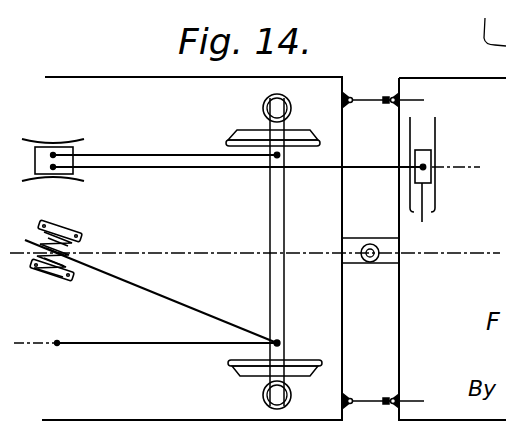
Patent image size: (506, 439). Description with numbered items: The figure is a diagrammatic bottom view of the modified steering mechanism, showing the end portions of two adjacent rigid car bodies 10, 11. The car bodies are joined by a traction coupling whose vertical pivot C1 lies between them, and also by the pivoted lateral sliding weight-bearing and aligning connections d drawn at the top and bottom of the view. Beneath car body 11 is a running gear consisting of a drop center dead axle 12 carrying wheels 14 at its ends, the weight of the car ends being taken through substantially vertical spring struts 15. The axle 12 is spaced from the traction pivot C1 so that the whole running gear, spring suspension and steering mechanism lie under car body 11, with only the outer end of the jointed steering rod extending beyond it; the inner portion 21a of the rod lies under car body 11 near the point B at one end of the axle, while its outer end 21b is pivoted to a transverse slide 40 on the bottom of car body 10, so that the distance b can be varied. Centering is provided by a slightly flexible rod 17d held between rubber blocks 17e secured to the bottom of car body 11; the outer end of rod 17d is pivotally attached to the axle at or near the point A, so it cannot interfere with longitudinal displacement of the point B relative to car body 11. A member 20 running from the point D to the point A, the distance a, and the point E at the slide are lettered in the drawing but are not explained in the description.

The car body 10 is at (484, 88).
The car body 11 is at (126, 91).
The drop center dead axle 12 is at (270, 212).
The wheels 14 is at (242, 128).
The spring struts 15 is at (266, 100).
The slightly flexible rod 17d is at (201, 312).
The rubber blocks 17e is at (88, 243).
The link 20 is at (168, 348).
The rod 21a is at (186, 151).
The steering rod 21b is at (380, 162).
The transverse slide 40 is at (419, 241).
The pivoted lateral sliding weight-bearing and aligning connections d is at (376, 89).
The vertical pivot C1 is at (371, 247).
The slide block E is at (432, 160).
The point A is at (282, 340).
The point B is at (281, 153).
The point D is at (57, 346).
The distance a is at (20, 255).
The distance b is at (465, 170).